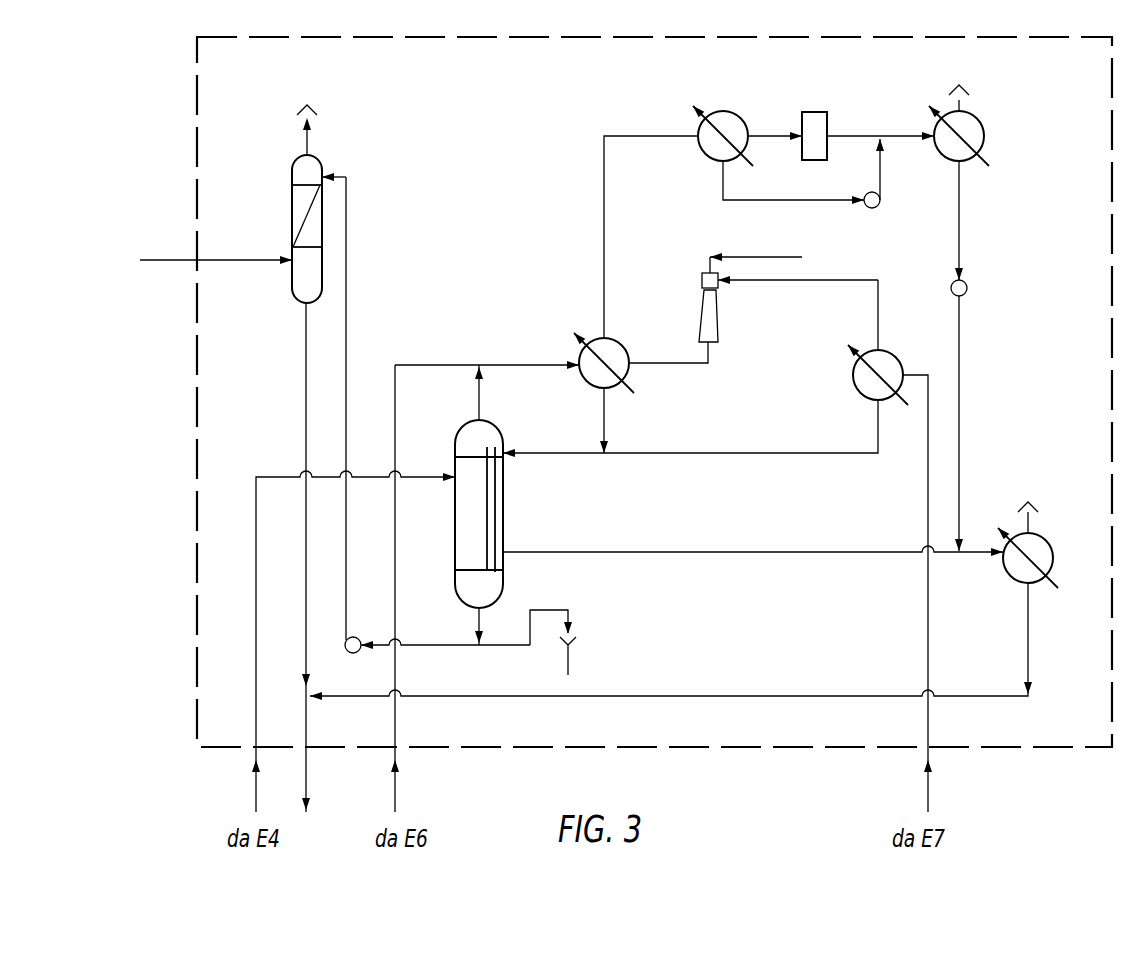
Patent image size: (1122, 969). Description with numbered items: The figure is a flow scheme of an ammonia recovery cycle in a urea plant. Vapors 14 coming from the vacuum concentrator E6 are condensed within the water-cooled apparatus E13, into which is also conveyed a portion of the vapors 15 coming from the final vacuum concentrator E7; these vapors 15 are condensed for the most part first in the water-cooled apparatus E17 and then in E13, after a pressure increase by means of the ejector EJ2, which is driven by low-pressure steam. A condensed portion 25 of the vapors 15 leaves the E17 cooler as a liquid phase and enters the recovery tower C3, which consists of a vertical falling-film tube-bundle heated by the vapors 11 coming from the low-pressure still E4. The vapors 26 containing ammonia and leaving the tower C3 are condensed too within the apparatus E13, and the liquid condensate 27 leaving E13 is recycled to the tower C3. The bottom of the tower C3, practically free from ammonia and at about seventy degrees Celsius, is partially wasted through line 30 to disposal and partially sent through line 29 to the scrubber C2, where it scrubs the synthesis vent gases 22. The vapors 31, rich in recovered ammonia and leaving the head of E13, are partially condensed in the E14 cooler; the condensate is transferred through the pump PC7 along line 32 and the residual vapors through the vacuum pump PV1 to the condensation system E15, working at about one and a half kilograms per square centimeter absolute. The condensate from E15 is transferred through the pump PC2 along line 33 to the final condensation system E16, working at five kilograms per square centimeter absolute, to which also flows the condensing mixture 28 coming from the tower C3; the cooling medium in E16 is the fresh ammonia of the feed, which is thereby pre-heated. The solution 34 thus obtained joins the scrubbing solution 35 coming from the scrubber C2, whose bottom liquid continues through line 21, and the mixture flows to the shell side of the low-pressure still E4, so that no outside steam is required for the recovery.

The vapors coming from low-pressure still E4 11 is at (343, 641).
The vapors coming from vacuum concentrator E6 14 is at (408, 588).
The vapors coming from final vacuum concentrator E7 15 is at (931, 593).
The line 21 is at (294, 754).
The synthesis vent 22 is at (216, 246).
The condensed portion of vapors 15 25 is at (690, 428).
The vapors coming from tower C3 26 is at (487, 390).
The liquid condensate leaving apparatus E13 27 is at (618, 420).
The condensing mixture coming from tower C3 28 is at (753, 536).
The line 29 is at (426, 413).
The line 30 (waste) 30 is at (553, 626).
The vapors leaving the head of E13 31 is at (651, 219).
The line 32 is at (793, 182).
The line 33 is at (972, 423).
The solution obtained from E16 34 is at (671, 641).
The scrubbing liquid from scrubber C2 35 is at (291, 499).
The scrubber C2 is at (289, 204).
The recovery tower C3 is at (460, 514).
The water-cooled apparatus E13 is at (611, 351).
The cooler E14 is at (723, 121).
The condensation system E15 is at (971, 121).
The final condensation system E16 is at (1037, 545).
The water-cooled apparatus (cooler) E17 is at (883, 342).
The vacuum pump PV1 is at (841, 118).
The pump PC7 is at (893, 177).
The pump PC2 is at (979, 232).
The ejector EJ2 is at (753, 294).